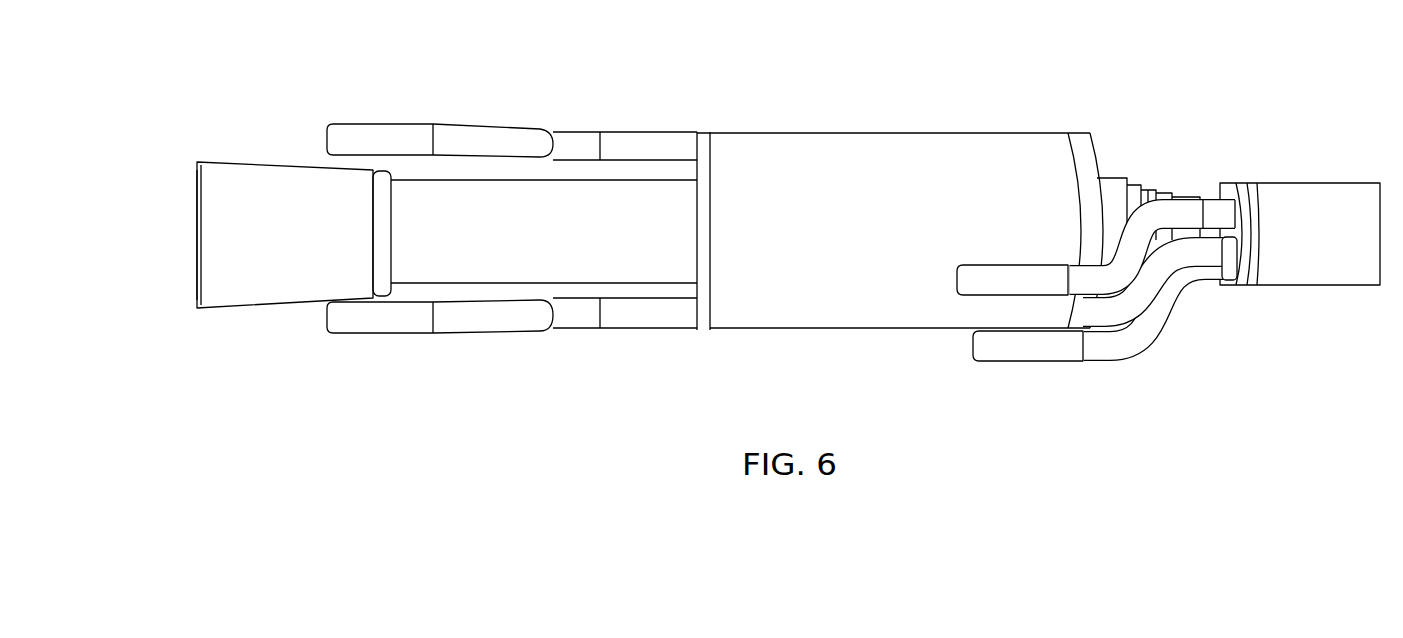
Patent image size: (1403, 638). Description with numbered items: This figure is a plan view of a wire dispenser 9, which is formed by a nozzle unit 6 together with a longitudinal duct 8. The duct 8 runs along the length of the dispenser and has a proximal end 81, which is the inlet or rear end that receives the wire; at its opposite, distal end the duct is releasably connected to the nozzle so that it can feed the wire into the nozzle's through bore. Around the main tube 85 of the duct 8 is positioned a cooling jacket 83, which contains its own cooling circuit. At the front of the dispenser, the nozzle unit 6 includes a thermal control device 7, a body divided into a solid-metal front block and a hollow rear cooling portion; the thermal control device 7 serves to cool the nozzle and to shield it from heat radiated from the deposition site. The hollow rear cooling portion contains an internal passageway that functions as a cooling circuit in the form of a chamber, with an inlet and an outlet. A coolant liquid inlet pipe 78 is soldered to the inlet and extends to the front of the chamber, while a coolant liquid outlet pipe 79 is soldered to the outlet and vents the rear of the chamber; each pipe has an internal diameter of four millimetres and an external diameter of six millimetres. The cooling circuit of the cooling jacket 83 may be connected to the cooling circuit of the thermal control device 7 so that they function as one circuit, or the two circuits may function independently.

The wire dispenser 9 is at (751, 220).
The longitudinal duct 8 is at (247, 268).
The proximal end 81 is at (194, 263).
The main tube 85 is at (502, 257).
The cooling jacket 83 is at (808, 304).
The coolant liquid outlet pipe 79 is at (998, 277).
The coolant liquid inlet pipe 78 is at (1030, 343).
The nozzle unit 6 is at (1300, 224).
The thermal control device 7 is at (1298, 247).